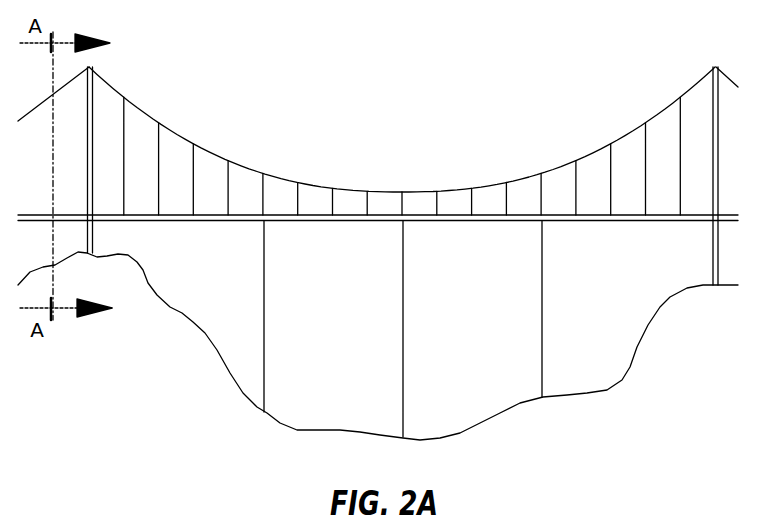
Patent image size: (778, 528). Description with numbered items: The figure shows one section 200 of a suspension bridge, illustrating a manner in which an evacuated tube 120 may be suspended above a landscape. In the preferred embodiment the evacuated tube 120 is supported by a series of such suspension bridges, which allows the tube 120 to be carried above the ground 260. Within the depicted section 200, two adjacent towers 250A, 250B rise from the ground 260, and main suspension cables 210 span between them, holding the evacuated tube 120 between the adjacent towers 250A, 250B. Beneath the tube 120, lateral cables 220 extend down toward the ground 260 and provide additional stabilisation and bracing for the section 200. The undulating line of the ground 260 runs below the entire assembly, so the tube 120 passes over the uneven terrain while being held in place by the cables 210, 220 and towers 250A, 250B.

The section of suspension bridge 200 is at (320, 132).
The main suspension cables 210 is at (145, 112).
The evacuated tube 120 is at (461, 221).
The tower 250A is at (93, 66).
The tower 250B is at (712, 66).
The lateral cables 220 is at (403, 352).
The ground 260 is at (648, 325).